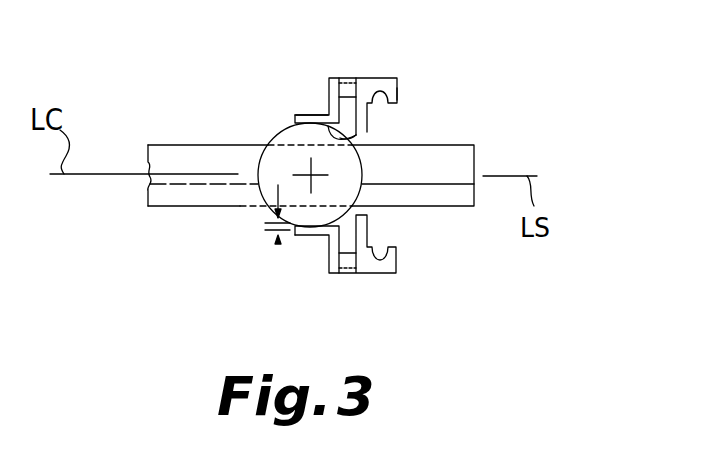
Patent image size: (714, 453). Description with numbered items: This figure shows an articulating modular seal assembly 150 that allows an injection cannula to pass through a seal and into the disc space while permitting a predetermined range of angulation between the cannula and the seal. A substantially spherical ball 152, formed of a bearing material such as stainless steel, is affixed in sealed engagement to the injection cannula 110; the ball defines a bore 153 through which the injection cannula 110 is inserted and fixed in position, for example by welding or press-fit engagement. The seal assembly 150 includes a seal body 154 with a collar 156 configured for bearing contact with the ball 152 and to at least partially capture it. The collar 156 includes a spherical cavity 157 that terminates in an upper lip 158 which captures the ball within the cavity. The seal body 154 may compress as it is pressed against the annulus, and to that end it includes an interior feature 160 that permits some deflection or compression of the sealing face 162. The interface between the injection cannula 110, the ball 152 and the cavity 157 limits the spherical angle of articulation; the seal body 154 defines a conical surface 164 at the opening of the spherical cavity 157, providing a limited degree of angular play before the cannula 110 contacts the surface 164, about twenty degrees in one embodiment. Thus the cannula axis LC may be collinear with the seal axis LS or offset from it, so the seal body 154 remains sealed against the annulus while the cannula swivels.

The injection cannula 110 is at (163, 162).
The articulating modular seal assembly 150 is at (268, 210).
The spherical ball 152 is at (290, 157).
The bore 153 is at (338, 203).
The seal body 154 is at (374, 78).
The collar 156 is at (302, 113).
The spherical cavity 157 is at (356, 136).
The upper lip 158 is at (278, 244).
The interior feature 160 is at (397, 262).
The sealing face 162 is at (398, 88).
The conical surface 164 is at (356, 137).